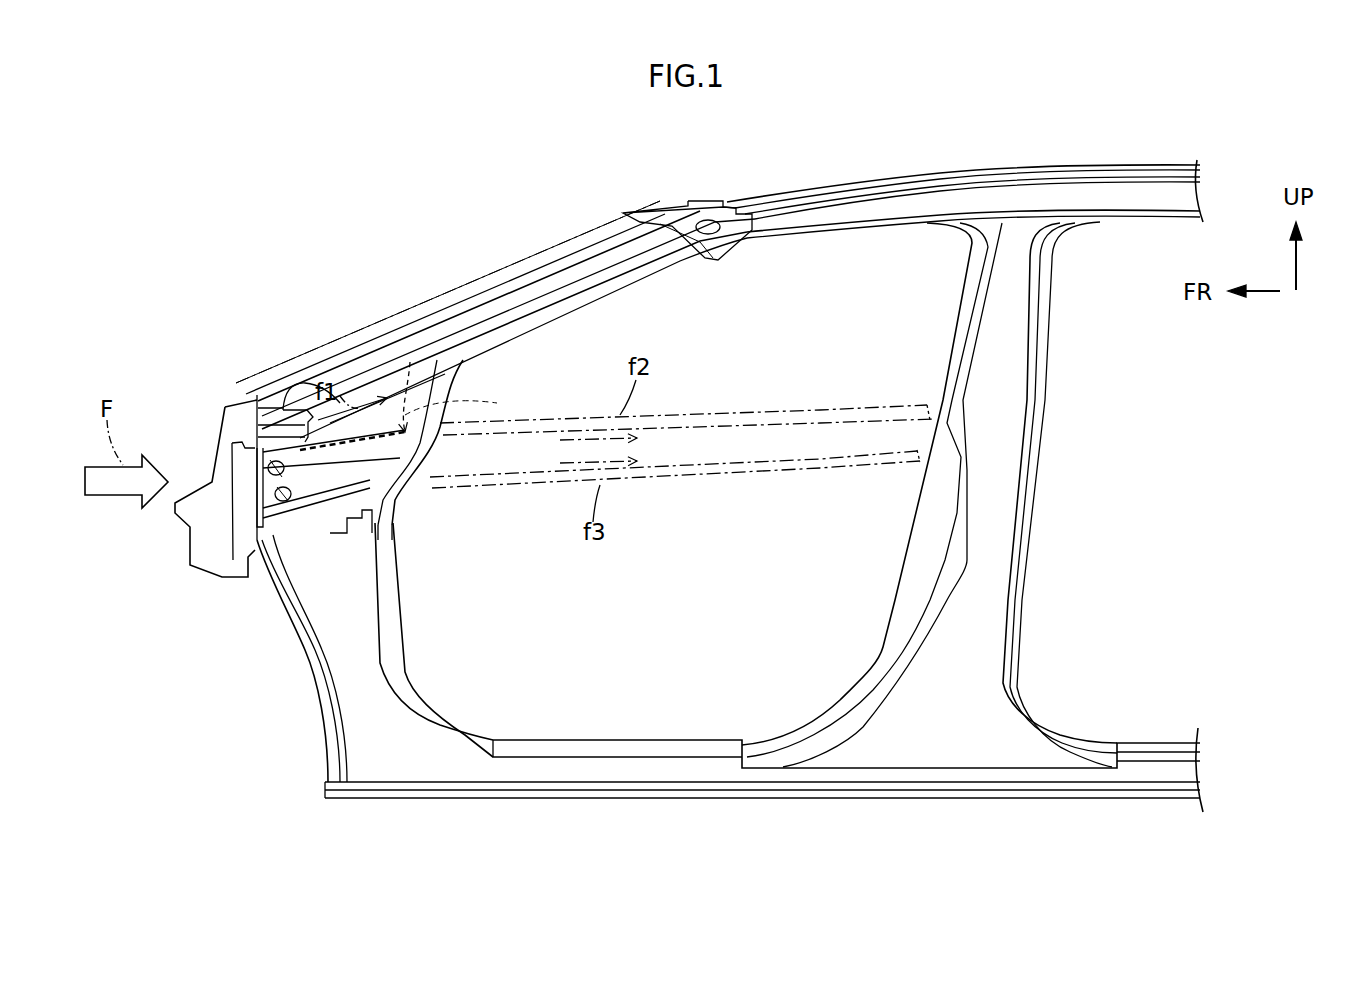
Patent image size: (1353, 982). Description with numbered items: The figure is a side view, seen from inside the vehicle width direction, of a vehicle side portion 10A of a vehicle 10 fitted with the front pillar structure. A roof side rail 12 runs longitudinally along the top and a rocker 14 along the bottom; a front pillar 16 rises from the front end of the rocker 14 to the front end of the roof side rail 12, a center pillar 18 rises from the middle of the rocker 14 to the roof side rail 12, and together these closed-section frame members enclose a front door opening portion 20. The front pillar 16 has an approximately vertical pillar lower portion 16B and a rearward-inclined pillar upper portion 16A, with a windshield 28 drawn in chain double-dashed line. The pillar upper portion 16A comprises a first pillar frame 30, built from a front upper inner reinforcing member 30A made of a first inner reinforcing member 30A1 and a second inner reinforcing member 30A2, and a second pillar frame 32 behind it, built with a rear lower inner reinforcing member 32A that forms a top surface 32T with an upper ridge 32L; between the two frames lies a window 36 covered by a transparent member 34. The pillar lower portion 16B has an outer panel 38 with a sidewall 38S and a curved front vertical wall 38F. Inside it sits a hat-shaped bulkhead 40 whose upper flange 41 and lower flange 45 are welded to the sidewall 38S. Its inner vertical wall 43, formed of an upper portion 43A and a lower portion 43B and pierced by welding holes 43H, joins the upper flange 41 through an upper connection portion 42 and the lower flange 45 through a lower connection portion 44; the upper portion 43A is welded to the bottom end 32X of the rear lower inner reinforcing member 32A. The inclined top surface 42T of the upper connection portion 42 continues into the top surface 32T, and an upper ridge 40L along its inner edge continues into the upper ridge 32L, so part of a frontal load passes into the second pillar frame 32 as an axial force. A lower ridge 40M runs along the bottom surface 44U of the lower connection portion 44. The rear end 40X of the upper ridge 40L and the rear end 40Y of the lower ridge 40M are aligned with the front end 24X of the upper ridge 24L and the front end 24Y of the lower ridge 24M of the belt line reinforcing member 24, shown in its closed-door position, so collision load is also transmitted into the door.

The vehicle 10 is at (290, 205).
The vehicle side portion 10A is at (985, 163).
The roof side rail 12 is at (940, 182).
The rocker 14 is at (605, 740).
The front pillar 16 is at (263, 645).
The pillar upper portion 16A is at (367, 332).
The pillar lower portion 16B is at (420, 568).
The center pillar 18 is at (900, 578).
The front door opening portion 20 is at (830, 247).
The belt line reinforcing member 24 is at (705, 487).
The upper ridge of belt line reinforcing member 24L is at (665, 420).
The lower ridge of belt line reinforcing member 24M is at (648, 472).
The front end of upper ridge 24L 24X is at (470, 452).
The front end of lower ridge 24M 24Y is at (475, 485).
The windshield 28 is at (497, 265).
The first pillar frame 30 is at (488, 285).
The front upper inner reinforcing member 30A is at (418, 328).
The first inner reinforcing member 30A1 is at (436, 310).
The second inner reinforcing member 30A2 is at (255, 365).
The second pillar frame 32 is at (540, 347).
The rear lower inner reinforcing member 32A is at (518, 355).
The upper ridge of second pillar frame 32L is at (300, 360).
The top surface of second pillar frame 32T is at (420, 320).
The bottom end of rear lower inner reinforcing member 32X is at (400, 455).
The transparent member 34 is at (548, 290).
The window 36 is at (540, 300).
The outer panel 38 is at (400, 600).
The front vertical wall 38F is at (272, 532).
The sidewall 38S is at (345, 625).
The bulkhead 40 is at (300, 520).
The upper ridge of bulkhead 40L is at (290, 415).
The lower ridge of bulkhead 40M is at (355, 500).
The rear end of upper ridge 40L 40X is at (440, 428).
The rear end of lower ridge 40M 40Y is at (388, 488).
The upper flange 41 is at (411, 385).
The upper connection portion 42 is at (440, 410).
The top surface of upper connection portion 42T is at (258, 415).
The inner vertical wall 43 is at (262, 500).
The upper portion of inner vertical wall 43A is at (258, 462).
The lower portion of inner vertical wall 43B is at (258, 518).
The holes 43H is at (262, 472).
The lower connection portion 44 is at (395, 520).
The bottom surface of lower connection portion 44U is at (315, 525).
The lower flange 45 is at (357, 495).